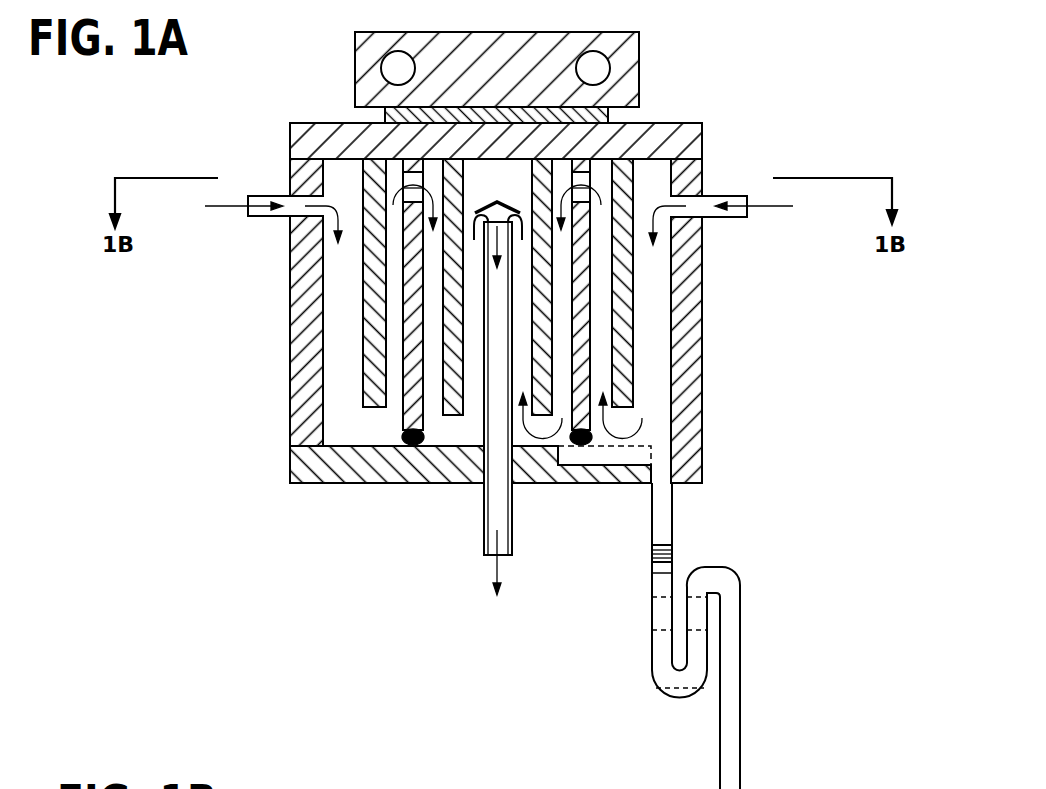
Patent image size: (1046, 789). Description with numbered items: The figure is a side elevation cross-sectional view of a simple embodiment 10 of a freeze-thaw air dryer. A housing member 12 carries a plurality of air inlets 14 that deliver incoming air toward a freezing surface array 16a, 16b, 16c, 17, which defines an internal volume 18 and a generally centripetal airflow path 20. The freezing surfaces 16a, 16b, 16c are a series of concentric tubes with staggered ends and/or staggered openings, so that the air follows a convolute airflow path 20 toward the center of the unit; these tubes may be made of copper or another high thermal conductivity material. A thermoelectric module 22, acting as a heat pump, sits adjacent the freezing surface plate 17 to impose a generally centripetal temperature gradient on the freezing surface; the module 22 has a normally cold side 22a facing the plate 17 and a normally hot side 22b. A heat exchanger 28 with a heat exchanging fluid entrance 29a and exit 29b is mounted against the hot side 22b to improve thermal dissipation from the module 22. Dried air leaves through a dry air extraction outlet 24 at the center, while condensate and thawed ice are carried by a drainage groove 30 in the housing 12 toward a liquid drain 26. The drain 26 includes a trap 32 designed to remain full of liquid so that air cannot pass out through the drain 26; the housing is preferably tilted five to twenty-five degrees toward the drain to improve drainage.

The freeze-thaw air dryer embodiment 10 is at (222, 545).
The housing member 12 is at (702, 366).
The air inlet 14 is at (275, 216).
The freezing surface 16a is at (371, 483).
The freezing surface 16b is at (415, 483).
The freezing surface 16c is at (472, 483).
The freezing surface plate 17 is at (292, 145).
The internal volume 18 is at (392, 342).
The airflow path 20 is at (518, 483).
The thermoelectric module 22 is at (608, 118).
The cold side 22a is at (384, 118).
The hot side 22b is at (384, 110).
The dry air extraction outlet 24 is at (483, 530).
The liquid drain 26 is at (672, 500).
The heat exchanger 28 is at (497, 32).
The heat exchanging fluid entrance 29a is at (381, 68).
The heat exchanging fluid exit 29b is at (610, 72).
The drainage groove 30 is at (593, 483).
The trap 32 is at (650, 672).